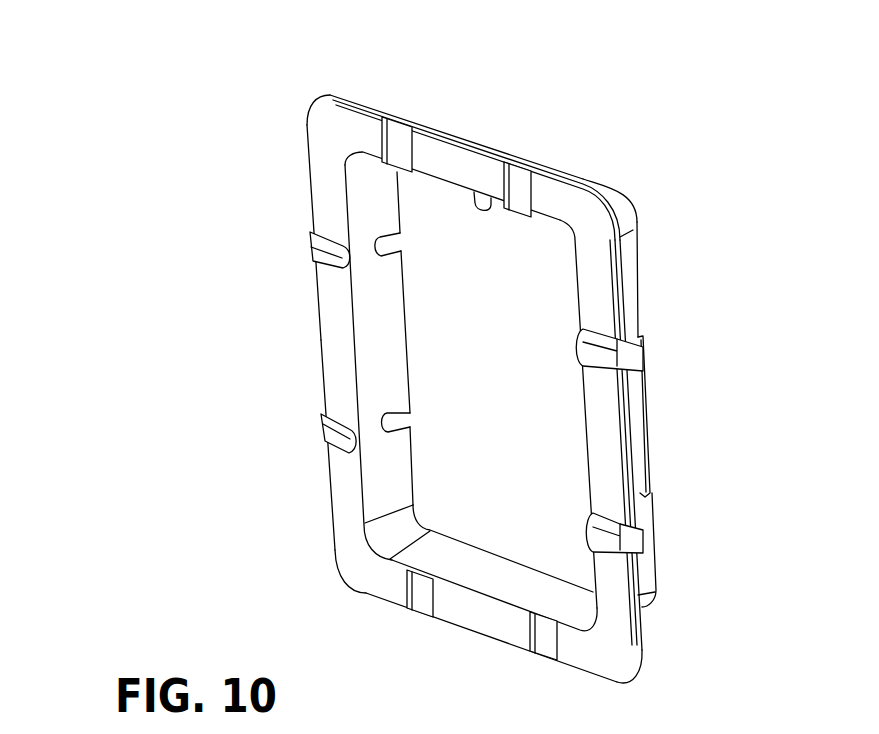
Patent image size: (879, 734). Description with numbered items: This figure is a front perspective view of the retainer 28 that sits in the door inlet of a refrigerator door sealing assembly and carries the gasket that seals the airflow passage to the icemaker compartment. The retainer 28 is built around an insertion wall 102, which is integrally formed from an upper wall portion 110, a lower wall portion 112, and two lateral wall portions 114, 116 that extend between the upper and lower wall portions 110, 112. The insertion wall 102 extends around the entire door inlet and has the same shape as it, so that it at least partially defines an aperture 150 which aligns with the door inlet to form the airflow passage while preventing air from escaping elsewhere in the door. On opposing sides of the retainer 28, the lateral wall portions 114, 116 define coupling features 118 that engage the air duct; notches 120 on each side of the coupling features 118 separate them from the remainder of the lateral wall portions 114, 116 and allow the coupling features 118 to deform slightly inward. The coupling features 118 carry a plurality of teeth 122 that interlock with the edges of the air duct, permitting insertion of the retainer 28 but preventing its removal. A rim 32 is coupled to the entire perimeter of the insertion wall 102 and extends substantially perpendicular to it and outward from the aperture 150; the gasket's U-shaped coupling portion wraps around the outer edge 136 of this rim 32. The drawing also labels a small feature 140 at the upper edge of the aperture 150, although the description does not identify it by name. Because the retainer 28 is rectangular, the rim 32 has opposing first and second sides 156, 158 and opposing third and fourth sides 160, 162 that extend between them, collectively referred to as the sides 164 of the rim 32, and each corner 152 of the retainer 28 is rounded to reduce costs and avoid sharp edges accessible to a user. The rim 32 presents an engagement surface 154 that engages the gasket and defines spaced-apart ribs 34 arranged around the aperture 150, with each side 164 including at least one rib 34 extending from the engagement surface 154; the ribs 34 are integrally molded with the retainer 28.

The retainer 28 is at (343, 85).
The rim 32 is at (328, 175).
The ribs 34 is at (394, 143).
The insertion wall 102 is at (613, 190).
The upper wall portion 110 is at (558, 172).
The lower wall portion 112 is at (500, 583).
The lateral wall portion 114 is at (630, 288).
The lateral wall portion 116 is at (377, 192).
The coupling features 118 is at (383, 363).
The notches 120 is at (385, 253).
The teeth 122 is at (656, 431).
The outer edge 136 is at (443, 132).
The slot 140 is at (496, 186).
The aperture 150 is at (557, 545).
The corner 152 is at (313, 103).
The engagement surface 154 is at (603, 400).
The first side 156 is at (476, 165).
The second side 158 is at (447, 607).
The third side 160 is at (322, 347).
The fourth side 162 is at (613, 566).
The sides 164 is at (684, 615).